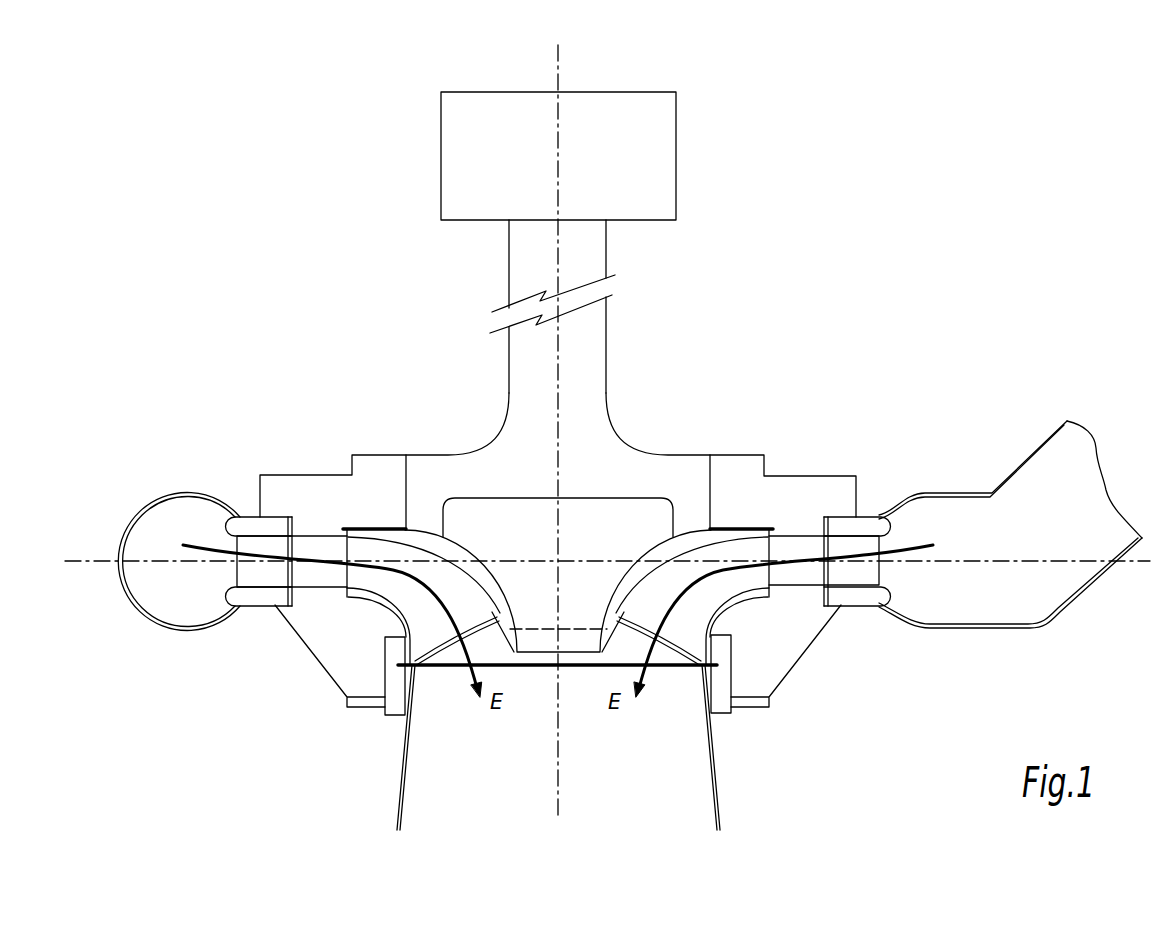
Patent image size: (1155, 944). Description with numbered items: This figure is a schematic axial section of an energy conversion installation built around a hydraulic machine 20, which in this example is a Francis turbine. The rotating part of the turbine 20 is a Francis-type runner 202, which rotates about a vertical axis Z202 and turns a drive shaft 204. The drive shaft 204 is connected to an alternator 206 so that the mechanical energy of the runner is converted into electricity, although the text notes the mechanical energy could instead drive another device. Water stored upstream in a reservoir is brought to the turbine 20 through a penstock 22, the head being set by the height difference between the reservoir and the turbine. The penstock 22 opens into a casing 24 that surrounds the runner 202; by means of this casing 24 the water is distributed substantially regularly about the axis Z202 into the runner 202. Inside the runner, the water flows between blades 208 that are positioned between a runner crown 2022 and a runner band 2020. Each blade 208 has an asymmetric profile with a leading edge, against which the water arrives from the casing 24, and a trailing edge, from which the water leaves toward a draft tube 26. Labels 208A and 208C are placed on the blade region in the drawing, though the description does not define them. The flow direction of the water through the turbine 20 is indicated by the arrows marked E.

The hydraulic machine 20 is at (655, 402).
The penstock 22 is at (1067, 448).
The casing 24 is at (143, 527).
The draft tube 26 is at (673, 793).
The Francis-type runner 202 is at (574, 552).
The drive shaft 204 is at (582, 258).
The alternator 206 is at (558, 156).
The blades 208 is at (908, 680).
The blade leading edge 208A is at (713, 600).
The blade trailing edge 208C is at (687, 655).
The runner band 2020 is at (413, 632).
The runner crown 2022 is at (433, 557).
The vertical axis Z202 is at (607, 427).